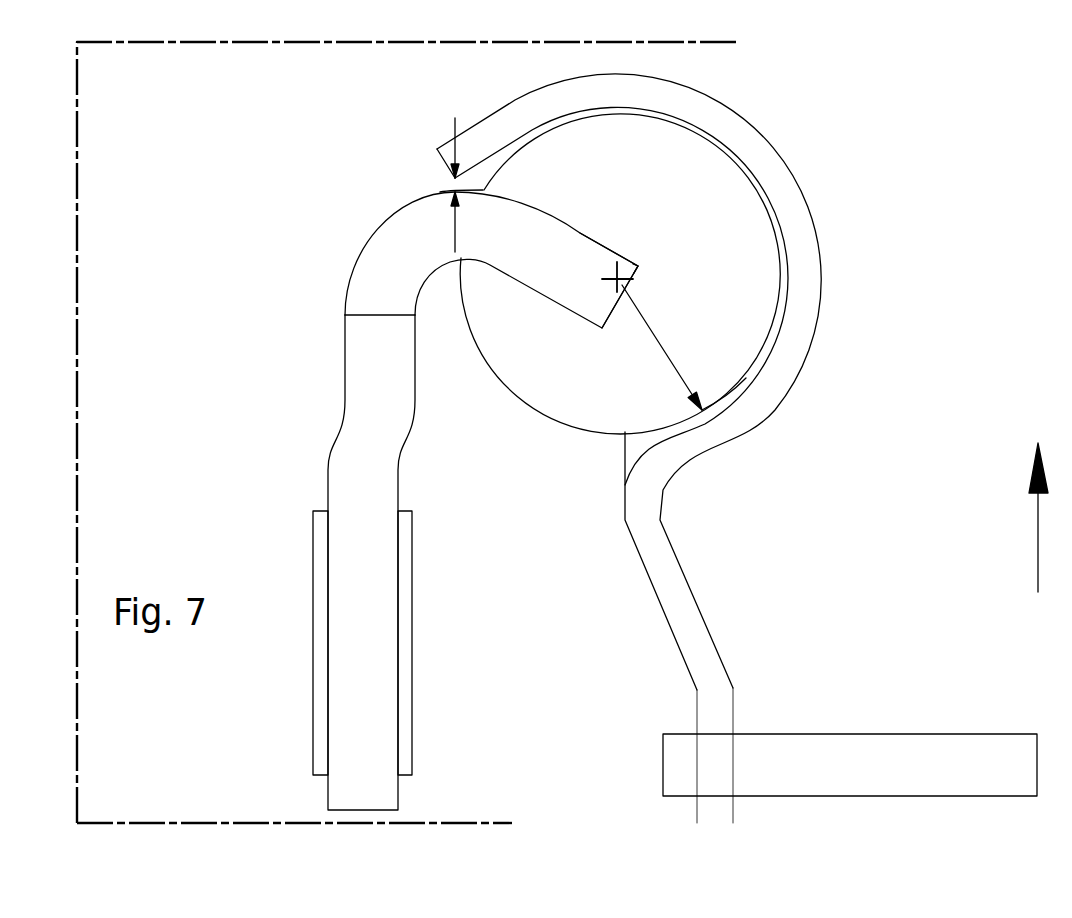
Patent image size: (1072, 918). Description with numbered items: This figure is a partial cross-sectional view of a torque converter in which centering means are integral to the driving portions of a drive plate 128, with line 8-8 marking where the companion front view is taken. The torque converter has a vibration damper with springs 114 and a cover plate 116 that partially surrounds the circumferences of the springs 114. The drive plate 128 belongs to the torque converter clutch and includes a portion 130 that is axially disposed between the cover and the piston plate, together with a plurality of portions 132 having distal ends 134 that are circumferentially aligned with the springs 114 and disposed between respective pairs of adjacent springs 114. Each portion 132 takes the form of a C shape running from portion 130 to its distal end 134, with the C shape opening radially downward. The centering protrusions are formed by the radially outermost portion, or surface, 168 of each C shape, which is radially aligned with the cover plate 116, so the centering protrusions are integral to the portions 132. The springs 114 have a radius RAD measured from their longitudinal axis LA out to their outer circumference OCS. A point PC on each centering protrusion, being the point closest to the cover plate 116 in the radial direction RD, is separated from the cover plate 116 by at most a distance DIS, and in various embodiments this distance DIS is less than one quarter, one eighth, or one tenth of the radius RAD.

The line 8- 8 is at (790, 42).
The springs 114 is at (688, 132).
The cover plate 116 is at (780, 147).
The drive plate 128 is at (327, 464).
The portion 130 is at (368, 783).
The portions 132 is at (563, 258).
The distal ends 134 is at (633, 268).
The radially outermost surface 168 is at (483, 190).
The distance DIS is at (455, 232).
The points PC is at (455, 192).
The longitudinal axis LA is at (620, 283).
The radius RAD is at (663, 345).
The outer circumference OCS is at (746, 378).
The radial direction RD is at (1038, 543).